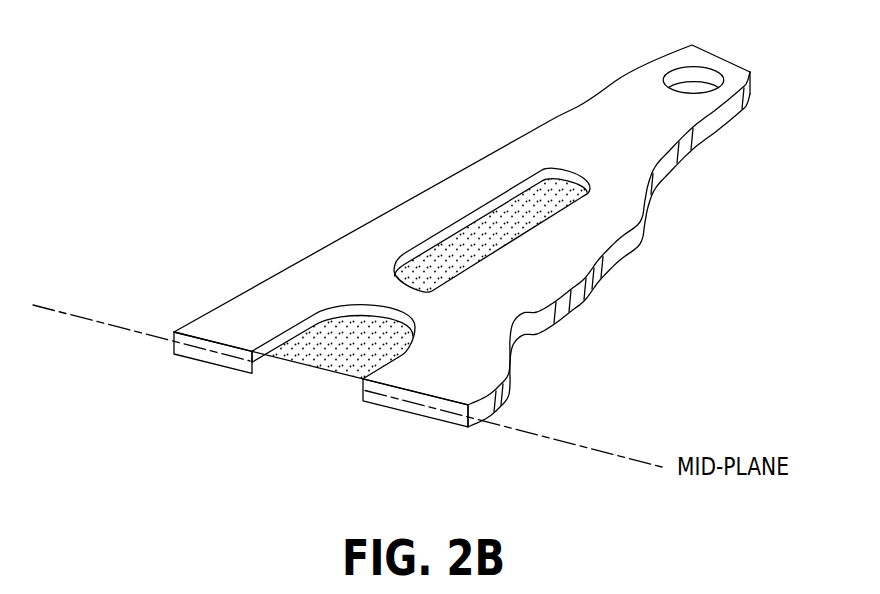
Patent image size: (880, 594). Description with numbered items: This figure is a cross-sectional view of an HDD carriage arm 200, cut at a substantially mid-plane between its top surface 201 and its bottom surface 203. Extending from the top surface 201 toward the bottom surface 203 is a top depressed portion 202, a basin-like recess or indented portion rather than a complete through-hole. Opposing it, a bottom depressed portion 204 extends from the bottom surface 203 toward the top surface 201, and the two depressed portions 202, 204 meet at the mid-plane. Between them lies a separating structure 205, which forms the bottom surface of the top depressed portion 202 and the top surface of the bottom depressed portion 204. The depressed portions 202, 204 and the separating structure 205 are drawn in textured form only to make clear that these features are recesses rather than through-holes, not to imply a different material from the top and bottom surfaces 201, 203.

The carriage arm 200 is at (224, 88).
The top surface 201 is at (585, 125).
The top depressed portion 202 is at (450, 254).
The bottom surface 203 is at (583, 325).
The bottom depressed portion 204 is at (311, 392).
The separating structure 205 is at (512, 222).